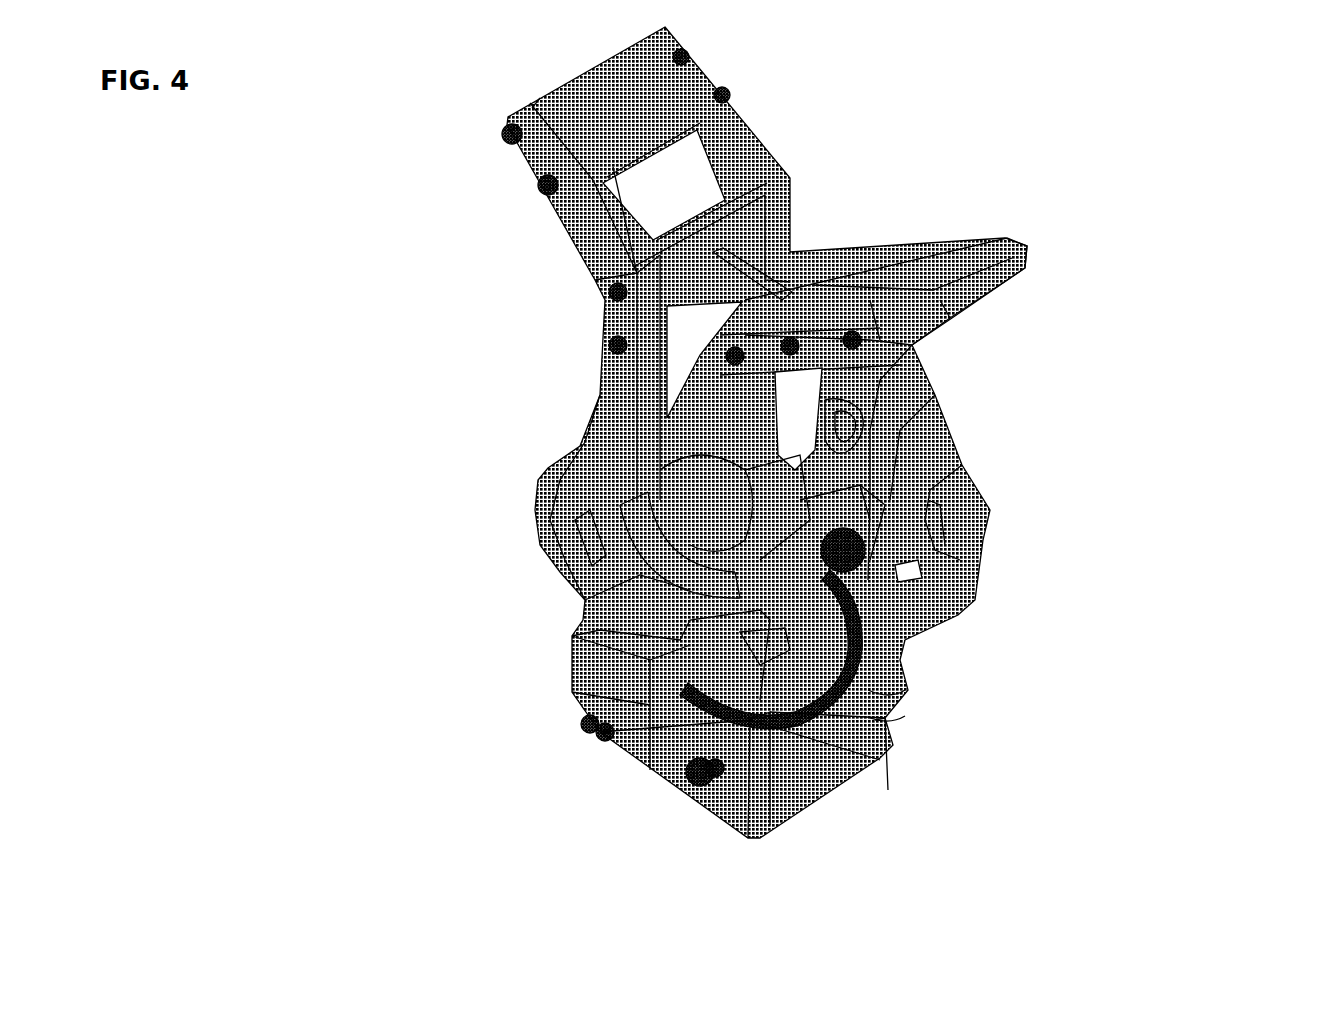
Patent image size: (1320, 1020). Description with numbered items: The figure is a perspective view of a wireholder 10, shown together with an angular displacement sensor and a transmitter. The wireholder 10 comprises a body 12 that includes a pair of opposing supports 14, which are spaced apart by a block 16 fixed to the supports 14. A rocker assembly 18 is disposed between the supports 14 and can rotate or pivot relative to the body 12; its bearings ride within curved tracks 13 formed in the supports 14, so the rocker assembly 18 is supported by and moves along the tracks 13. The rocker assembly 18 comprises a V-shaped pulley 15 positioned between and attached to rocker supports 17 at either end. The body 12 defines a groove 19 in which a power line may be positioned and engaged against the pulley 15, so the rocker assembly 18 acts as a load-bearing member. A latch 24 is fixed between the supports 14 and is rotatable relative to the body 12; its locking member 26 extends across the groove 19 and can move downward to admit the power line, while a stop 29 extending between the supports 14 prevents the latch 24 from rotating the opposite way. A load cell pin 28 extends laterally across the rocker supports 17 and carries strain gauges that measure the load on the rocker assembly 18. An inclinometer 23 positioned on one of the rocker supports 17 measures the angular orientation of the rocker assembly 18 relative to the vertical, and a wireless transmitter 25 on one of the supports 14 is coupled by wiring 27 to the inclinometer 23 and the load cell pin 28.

The wireholder 10 is at (1212, 153).
The body 12 is at (538, 478).
The curved tracks 13 is at (592, 550).
The supports 14 is at (990, 275).
The V-shaped pulley 15 is at (698, 455).
The block 16 is at (815, 748).
The rocker supports 17 is at (865, 528).
The rocker assembly 18 is at (687, 473).
The groove 19 is at (674, 359).
The inclinometer 23 is at (862, 632).
The latch 24 is at (905, 452).
The wireless transmitter 25 is at (590, 662).
The locking member 26 is at (782, 290).
The wiring 27 is at (858, 688).
The load cell pin 28 is at (865, 558).
The stop 29 is at (810, 445).